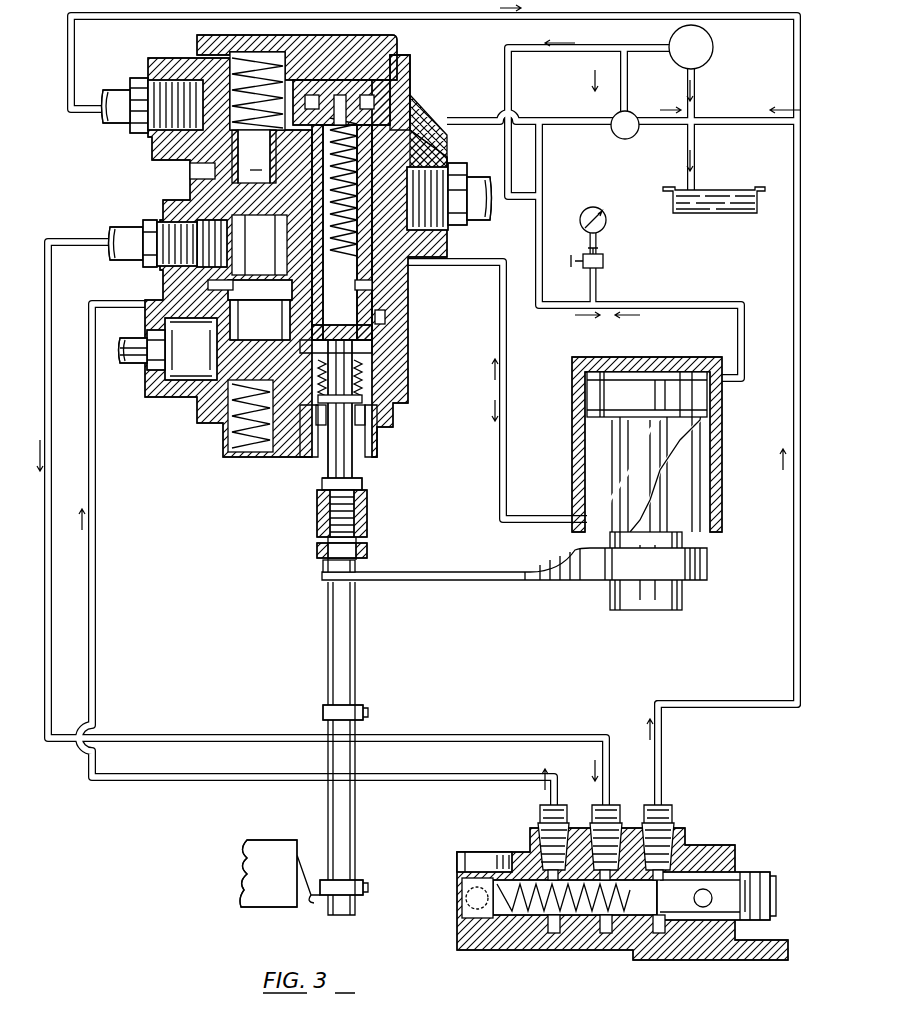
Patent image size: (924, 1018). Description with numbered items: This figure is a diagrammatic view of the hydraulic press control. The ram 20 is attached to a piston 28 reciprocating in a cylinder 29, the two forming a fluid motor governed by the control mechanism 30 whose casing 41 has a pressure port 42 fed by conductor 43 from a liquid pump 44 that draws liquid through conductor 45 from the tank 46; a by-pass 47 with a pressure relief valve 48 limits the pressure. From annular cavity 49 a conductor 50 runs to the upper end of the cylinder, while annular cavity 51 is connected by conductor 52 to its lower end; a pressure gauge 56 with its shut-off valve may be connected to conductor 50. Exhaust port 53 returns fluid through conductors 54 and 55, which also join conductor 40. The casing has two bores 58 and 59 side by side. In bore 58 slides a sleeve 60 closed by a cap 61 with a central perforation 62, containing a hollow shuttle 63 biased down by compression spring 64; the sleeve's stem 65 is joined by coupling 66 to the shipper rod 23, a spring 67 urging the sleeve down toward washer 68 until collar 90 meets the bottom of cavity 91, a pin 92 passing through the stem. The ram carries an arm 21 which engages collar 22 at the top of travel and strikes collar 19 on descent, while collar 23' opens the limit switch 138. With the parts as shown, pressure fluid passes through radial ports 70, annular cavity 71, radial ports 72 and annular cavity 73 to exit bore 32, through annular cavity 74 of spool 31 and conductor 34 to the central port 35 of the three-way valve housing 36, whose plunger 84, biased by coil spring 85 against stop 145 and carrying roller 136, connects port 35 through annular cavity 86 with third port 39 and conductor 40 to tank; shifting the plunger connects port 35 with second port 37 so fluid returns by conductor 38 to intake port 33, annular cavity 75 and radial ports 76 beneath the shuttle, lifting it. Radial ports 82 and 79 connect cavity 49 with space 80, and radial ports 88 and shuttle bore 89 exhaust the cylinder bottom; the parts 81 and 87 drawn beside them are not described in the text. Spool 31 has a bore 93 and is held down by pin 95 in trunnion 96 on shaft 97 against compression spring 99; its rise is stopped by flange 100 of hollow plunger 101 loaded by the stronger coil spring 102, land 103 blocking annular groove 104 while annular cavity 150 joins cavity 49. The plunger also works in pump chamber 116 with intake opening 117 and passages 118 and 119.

The adjustable collar 19 is at (323, 706).
The ram 20 is at (683, 600).
The arm 21 is at (560, 588).
The collar 22 is at (323, 567).
The shipper rod 23 is at (360, 748).
The collar 23' is at (357, 876).
The piston 28 is at (600, 394).
The cylinder 29 is at (572, 480).
The control mechanism 30 is at (299, 288).
The valve spool 31 is at (259, 245).
The bore 32 is at (192, 200).
The port 33 is at (275, 320).
The conductor 34 is at (106, 734).
The central port 35 is at (618, 830).
The housing 36 is at (735, 848).
The second port 37 is at (540, 852).
The conductor 38 is at (128, 784).
The third port 39 is at (670, 830).
The conductor 40 is at (796, 645).
The casing 41 is at (152, 150).
The pressure port 42 is at (430, 156).
The conductor 43 is at (624, 48).
The liquid pump 44 is at (713, 48).
The conductor 45 is at (695, 86).
The tank 46 is at (748, 216).
The by-pass 47 is at (670, 128).
The pressure relief valve 48 is at (612, 130).
The annular cavity 49 is at (412, 122).
The conductor 50 is at (539, 182).
The annular cavity 51 is at (410, 284).
The conductor 52 is at (500, 484).
The exhaust port 53 is at (180, 58).
The conductor 54 is at (71, 34).
The conductor 55 is at (770, 127).
The pressure gauge 56 is at (604, 220).
The valve bore 58 is at (395, 350).
The valve bore 59 is at (182, 268).
The sleeve 60 is at (392, 334).
The cap 61 is at (398, 40).
The central perforation 62 is at (335, 100).
The hollow shuttle 63 is at (405, 112).
The compression spring 64 is at (400, 100).
The stem 65 is at (352, 462).
The coupling 66 is at (357, 526).
The spring 67 is at (313, 377).
The washer 68 is at (366, 377).
The radial ports 70 is at (288, 208).
The annular cavity 71 is at (372, 186).
The radial ports 72 is at (298, 254).
The annular cavity 73 is at (300, 238).
The annular cavity 74 is at (212, 243).
The annular cavity 75 is at (385, 328).
The radial ports 76 is at (386, 316).
The radial ports 79 is at (305, 118).
The space 80 is at (325, 36).
The passage 81 is at (398, 262).
The radial ports 82 is at (270, 165).
The plunger 84 is at (733, 872).
The coil spring 85 is at (500, 945).
The annular cavity 86 is at (625, 940).
The groove 87 is at (382, 290).
The radial ports 88 is at (398, 305).
The bore 89 is at (398, 122).
The collar 90 is at (362, 400).
The cavity 91 is at (380, 436).
The pin 92 is at (377, 410).
The bore 93 is at (234, 245).
The pin 95 is at (215, 344).
The trunnion 96 is at (160, 331).
The shaft 97 is at (136, 362).
The compression spring 99 is at (228, 443).
The flange 100 is at (262, 118).
The hollow plunger 101 is at (254, 156).
The coil spring 102 is at (283, 40).
The land 103 is at (215, 295).
The annular groove 104 is at (260, 290).
The pump chamber 116 is at (505, 850).
The opening 117 is at (515, 944).
The passage 118 is at (468, 902).
The passage 119 is at (493, 888).
The roller 136 is at (772, 886).
The limit switch 138 is at (290, 838).
The stop 145 is at (708, 908).
The annular cavity 150 is at (190, 172).